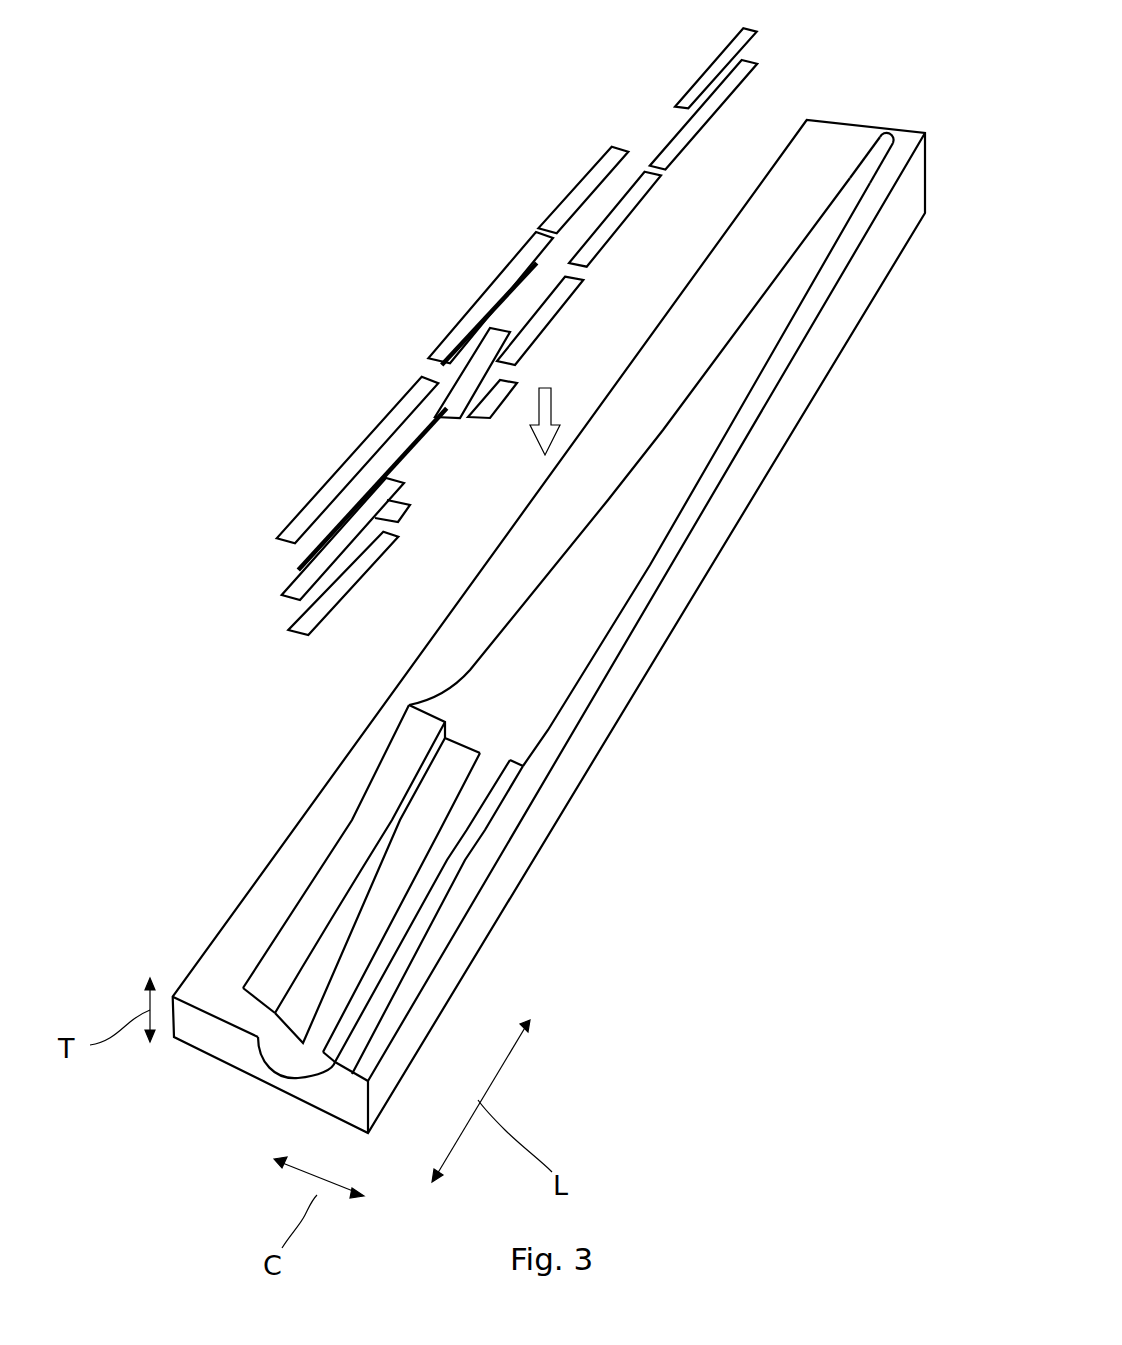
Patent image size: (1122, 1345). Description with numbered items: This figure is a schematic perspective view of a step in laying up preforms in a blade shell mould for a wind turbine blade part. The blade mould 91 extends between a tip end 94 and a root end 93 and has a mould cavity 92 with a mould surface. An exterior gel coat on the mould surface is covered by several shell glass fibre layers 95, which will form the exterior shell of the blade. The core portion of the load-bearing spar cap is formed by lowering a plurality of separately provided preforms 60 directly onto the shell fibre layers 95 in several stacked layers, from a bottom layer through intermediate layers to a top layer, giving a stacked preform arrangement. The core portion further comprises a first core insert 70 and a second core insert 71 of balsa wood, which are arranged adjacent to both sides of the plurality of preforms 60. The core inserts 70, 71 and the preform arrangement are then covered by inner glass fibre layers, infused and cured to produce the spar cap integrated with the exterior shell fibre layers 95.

The preform 60 is at (535, 275).
The first core insert 70 is at (438, 460).
The second core insert 71 is at (568, 220).
The blade mould 91 is at (787, 378).
The mould cavity 92 is at (626, 552).
The root end 93 is at (262, 1078).
The tip end 94 is at (888, 130).
The shell fibre layer 95 is at (549, 645).